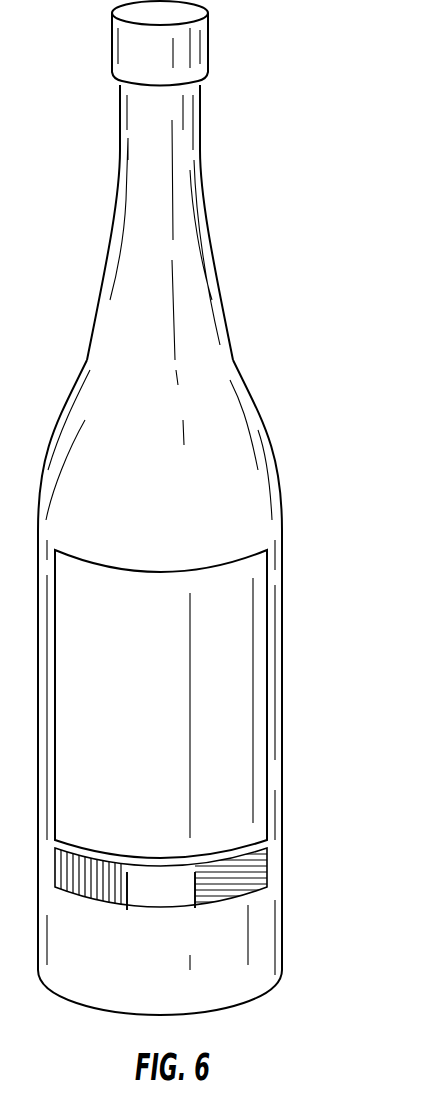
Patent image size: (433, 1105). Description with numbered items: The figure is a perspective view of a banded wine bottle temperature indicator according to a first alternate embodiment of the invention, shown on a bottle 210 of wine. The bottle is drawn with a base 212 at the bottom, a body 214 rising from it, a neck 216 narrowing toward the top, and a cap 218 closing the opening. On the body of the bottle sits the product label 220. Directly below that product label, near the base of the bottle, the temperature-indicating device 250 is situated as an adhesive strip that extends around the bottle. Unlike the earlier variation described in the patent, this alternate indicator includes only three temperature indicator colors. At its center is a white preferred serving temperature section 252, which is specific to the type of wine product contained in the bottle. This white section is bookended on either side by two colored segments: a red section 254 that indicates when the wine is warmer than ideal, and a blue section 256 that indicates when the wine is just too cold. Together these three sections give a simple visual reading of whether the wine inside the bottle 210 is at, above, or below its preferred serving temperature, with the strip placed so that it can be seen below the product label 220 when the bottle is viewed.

The bottle 210 is at (307, 463).
The base 212 is at (270, 980).
The body 214 is at (267, 792).
The neck 216 is at (230, 345).
The cap 218 is at (195, 70).
The product label 220 is at (177, 718).
The temperature-indicating device 250 is at (223, 903).
The preferred serving temperature section 252 is at (148, 908).
The red section 254 is at (80, 902).
The blue section 256 is at (203, 904).